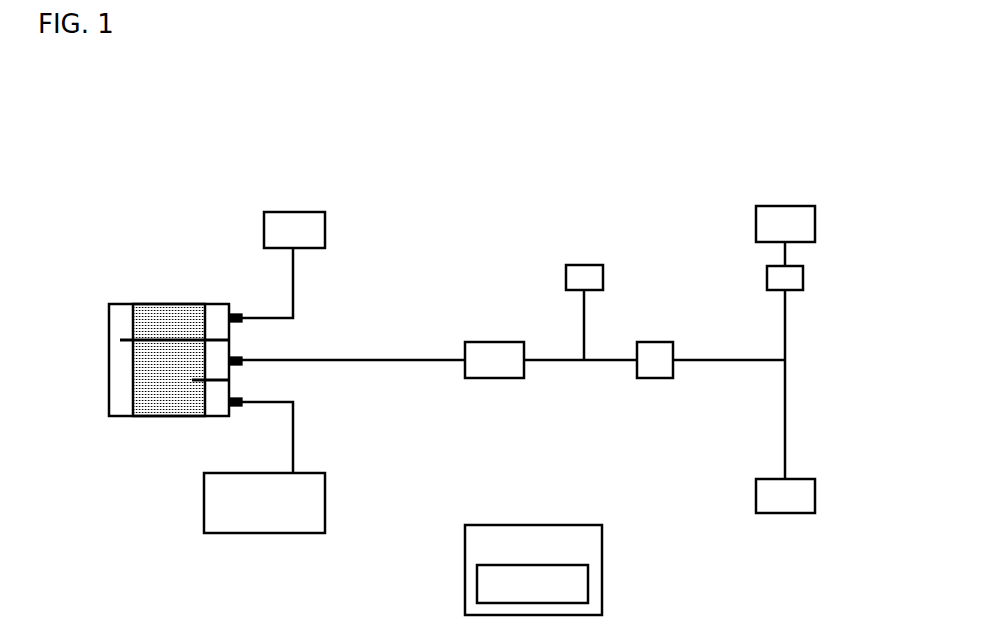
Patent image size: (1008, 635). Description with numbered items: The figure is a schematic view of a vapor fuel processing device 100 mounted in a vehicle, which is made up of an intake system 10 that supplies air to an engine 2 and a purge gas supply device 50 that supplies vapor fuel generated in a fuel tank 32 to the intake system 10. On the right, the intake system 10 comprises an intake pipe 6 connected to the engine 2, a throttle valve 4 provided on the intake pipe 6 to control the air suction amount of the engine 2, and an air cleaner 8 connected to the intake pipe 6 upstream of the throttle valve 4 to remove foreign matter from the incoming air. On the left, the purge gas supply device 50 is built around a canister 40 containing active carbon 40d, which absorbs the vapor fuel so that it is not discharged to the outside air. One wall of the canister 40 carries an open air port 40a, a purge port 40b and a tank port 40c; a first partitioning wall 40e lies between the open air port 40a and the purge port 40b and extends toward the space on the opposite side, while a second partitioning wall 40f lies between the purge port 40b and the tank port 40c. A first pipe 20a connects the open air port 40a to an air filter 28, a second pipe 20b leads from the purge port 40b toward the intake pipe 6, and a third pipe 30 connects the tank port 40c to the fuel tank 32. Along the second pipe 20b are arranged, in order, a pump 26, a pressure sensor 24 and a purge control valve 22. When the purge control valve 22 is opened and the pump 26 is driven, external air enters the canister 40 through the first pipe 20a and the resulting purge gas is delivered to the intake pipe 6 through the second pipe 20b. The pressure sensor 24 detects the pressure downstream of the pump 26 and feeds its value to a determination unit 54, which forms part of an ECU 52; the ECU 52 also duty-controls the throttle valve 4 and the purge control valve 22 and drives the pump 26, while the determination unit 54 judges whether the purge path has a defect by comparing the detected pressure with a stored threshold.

The vapor fuel processing device 100 is at (732, 137).
The purge gas supply device 50 is at (600, 223).
The intake system 10 is at (735, 447).
The canister 40 is at (210, 365).
The open air port 40a is at (235, 314).
The purge port 40b is at (235, 357).
The tank port 40c is at (235, 406).
The active carbon 40d is at (148, 402).
The first partitioning wall 40e is at (128, 337).
The second partitioning wall 40f is at (200, 383).
The air filter 28 is at (325, 230).
The first pipe 20a is at (293, 270).
The second pipe 20b is at (379, 362).
The third pipe 30 is at (293, 448).
The fuel tank 32 is at (325, 503).
The pump 26 is at (495, 378).
The pressure sensor 24 is at (603, 278).
The purge control valve 22 is at (655, 378).
The engine 2 is at (815, 225).
The throttle valve 4 is at (803, 278).
The intake pipe 6 is at (785, 335).
The air cleaner 8 is at (815, 497).
The ECU 52 is at (602, 558).
The determination unit 54 is at (588, 584).